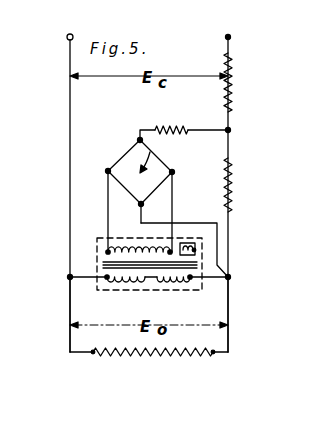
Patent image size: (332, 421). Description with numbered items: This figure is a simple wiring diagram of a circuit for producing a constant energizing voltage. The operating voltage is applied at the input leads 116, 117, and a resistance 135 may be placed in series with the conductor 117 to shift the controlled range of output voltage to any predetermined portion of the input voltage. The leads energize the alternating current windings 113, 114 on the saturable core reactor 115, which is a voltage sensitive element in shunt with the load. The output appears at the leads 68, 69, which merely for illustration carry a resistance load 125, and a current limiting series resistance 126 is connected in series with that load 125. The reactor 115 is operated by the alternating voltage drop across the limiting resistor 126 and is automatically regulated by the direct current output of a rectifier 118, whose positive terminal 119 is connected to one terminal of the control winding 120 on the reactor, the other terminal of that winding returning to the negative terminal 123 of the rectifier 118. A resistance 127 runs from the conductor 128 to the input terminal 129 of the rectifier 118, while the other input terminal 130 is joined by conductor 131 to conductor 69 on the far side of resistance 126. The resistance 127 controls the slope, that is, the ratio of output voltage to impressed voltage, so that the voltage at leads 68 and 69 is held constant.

The lead 116 is at (68, 72).
The lead 117 is at (231, 47).
The resistance 135 is at (231, 92).
The conductor 128 is at (231, 142).
The resistance 127 is at (175, 128).
The current limiting series resistance 126 is at (232, 181).
The input terminal 129 is at (137, 143).
The rectifier 118 is at (152, 149).
The negative terminal 123 is at (116, 158).
The positive terminal 119 is at (173, 172).
The input terminal 130 is at (144, 205).
The conductor 131 is at (199, 222).
The core reactor 115 is at (95, 260).
The control winding 120 is at (124, 248).
The alternating current winding 114 is at (126, 291).
The alternating current winding 113 is at (161, 316).
The lead 69 is at (70, 314).
The lead 68 is at (231, 309).
The resistance load 125 is at (182, 355).